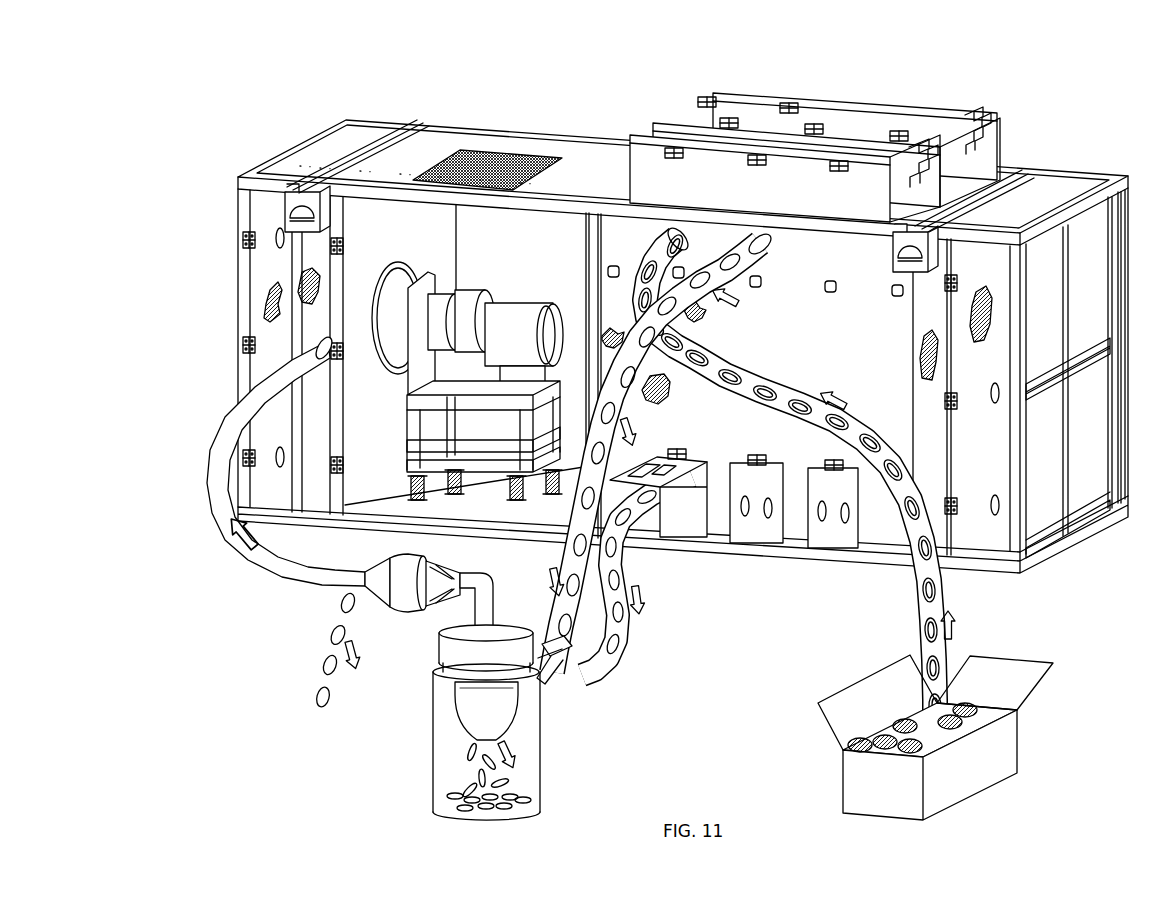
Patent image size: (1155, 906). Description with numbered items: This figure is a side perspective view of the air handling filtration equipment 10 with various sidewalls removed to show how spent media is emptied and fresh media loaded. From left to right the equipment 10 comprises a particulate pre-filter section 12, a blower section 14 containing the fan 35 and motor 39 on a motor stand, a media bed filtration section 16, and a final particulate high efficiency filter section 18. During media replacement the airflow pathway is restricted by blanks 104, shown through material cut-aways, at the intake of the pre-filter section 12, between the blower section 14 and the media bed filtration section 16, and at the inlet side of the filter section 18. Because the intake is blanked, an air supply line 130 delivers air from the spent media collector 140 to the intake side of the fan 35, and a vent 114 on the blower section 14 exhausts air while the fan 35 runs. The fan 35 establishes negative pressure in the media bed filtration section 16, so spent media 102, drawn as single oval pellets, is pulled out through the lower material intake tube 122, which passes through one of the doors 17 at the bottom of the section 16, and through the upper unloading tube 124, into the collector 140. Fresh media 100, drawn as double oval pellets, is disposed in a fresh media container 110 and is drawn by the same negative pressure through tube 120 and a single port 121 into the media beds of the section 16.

The air handling filtration system 10 is at (228, 92).
The particulate pre-filter section 12 is at (390, 96).
The blower section 14 is at (520, 114).
The vent 114 is at (548, 152).
The media bed filtration section 16 is at (907, 80).
The final particulate high efficiency filter section 18 is at (1083, 155).
The fan 35 is at (472, 272).
The motor 39 is at (522, 292).
The blanks 104 is at (272, 332).
The doors 17 is at (695, 462).
The tube 120 is at (945, 578).
The port 121 is at (688, 235).
The spent media 102 is at (575, 592).
The upper unloading tube 124 is at (558, 618).
The material intake tube 122 is at (628, 660).
The air supply line 130 is at (240, 558).
The spent media collector 140 is at (428, 758).
The fresh media container 110 is at (1040, 728).
The fresh media 100 is at (942, 700).